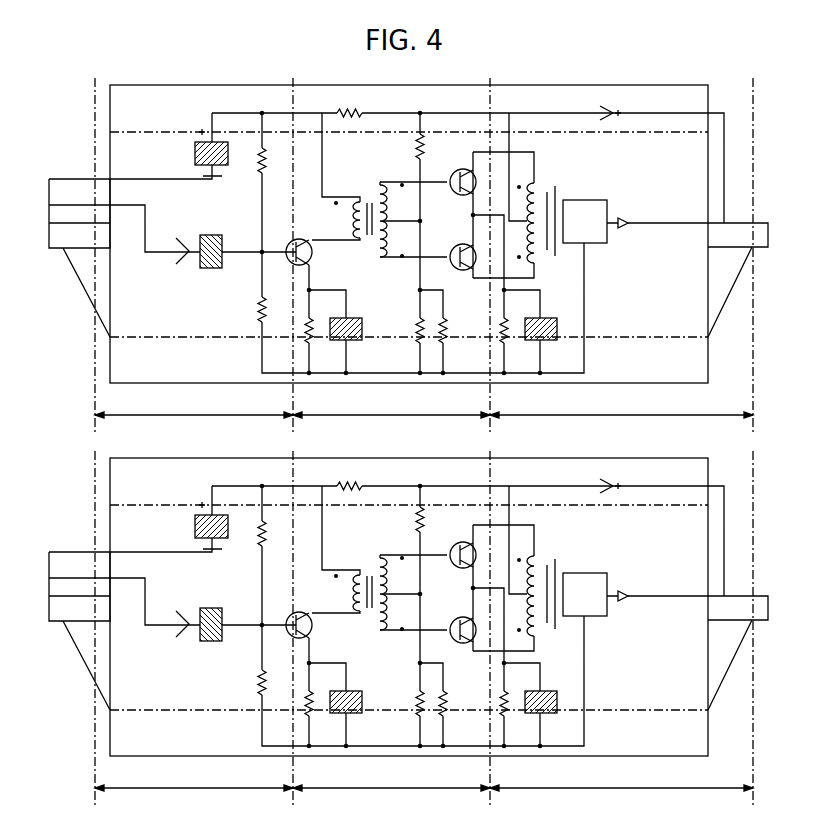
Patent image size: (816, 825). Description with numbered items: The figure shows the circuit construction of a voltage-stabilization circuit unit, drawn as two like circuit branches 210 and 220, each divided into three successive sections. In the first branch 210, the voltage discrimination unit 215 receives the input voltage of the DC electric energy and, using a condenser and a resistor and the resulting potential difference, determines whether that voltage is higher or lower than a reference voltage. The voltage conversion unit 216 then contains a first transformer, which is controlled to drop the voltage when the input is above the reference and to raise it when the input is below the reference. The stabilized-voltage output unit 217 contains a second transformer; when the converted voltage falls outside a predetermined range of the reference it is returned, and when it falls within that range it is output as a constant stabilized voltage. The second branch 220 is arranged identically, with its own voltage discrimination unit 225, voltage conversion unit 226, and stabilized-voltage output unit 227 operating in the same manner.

The first transmission circuit 210 is at (110, 112).
The voltage discrimination unit 215 is at (194, 407).
The voltage conversion unit 216 is at (391, 407).
The stabilized-voltage output unit 217 is at (621, 407).
The second transmission circuit 220 is at (400, 628).
The voltage discrimination unit 225 is at (194, 780).
The voltage conversion unit 226 is at (391, 780).
The stabilized-voltage output unit 227 is at (621, 780).